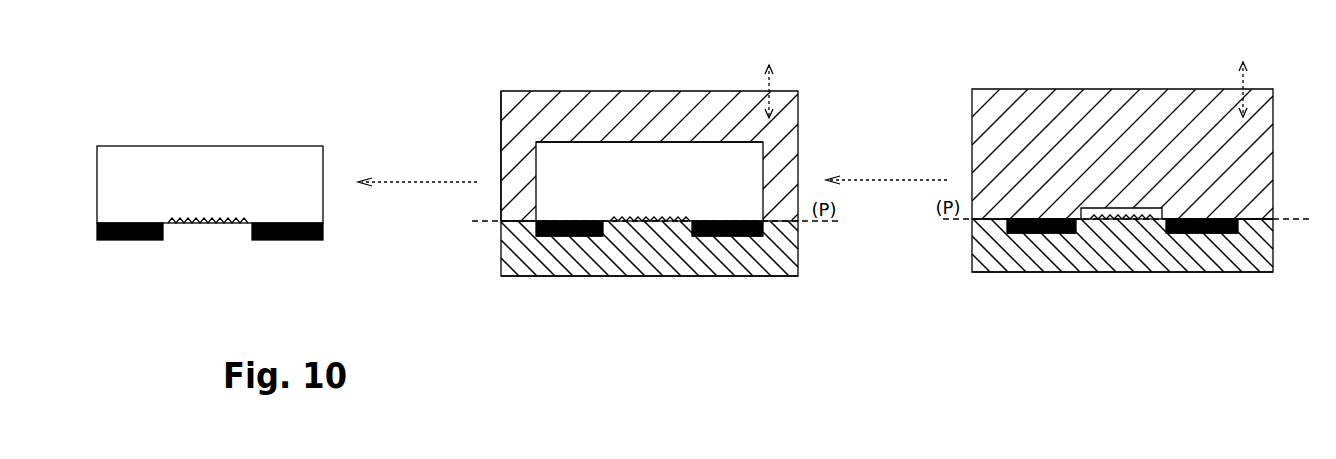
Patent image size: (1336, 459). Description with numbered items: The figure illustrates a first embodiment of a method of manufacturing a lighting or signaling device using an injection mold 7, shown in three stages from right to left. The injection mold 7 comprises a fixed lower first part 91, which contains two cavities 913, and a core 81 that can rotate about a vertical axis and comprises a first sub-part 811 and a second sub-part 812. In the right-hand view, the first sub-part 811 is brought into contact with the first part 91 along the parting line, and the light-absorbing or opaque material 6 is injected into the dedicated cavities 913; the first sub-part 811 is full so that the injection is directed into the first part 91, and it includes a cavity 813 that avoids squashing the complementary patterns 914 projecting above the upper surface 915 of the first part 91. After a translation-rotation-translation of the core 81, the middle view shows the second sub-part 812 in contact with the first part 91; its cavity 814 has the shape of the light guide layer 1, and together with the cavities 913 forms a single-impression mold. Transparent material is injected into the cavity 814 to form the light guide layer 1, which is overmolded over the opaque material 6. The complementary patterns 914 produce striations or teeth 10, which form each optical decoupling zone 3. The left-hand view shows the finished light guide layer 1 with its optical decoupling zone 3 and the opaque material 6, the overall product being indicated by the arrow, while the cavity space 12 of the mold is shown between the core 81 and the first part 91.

The light guide layer 1 is at (218, 129).
The optical decoupling zone 3 is at (215, 230).
The light-absorbing or opaque material 6 is at (140, 241).
The injection mold 7 is at (692, 288).
The striations or teeth 10 is at (612, 218).
The cavity 12 is at (542, 175).
The core 81 is at (543, 91).
The first part 91 is at (765, 277).
The first sub-part 811 is at (1102, 100).
The second sub-part 812 is at (513, 113).
The cavity 813 is at (1143, 207).
The cavity 814 is at (712, 143).
The cavities 913 is at (565, 238).
The complementary patterns 914 is at (657, 217).
The upper surface 915 is at (512, 224).